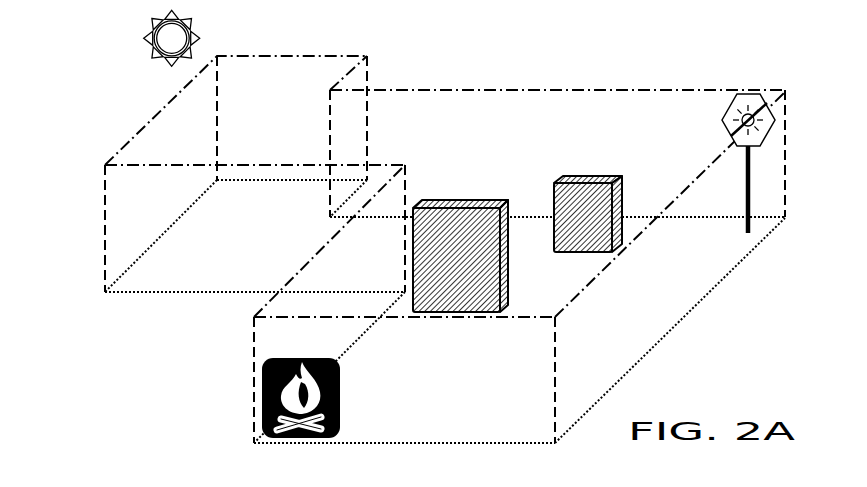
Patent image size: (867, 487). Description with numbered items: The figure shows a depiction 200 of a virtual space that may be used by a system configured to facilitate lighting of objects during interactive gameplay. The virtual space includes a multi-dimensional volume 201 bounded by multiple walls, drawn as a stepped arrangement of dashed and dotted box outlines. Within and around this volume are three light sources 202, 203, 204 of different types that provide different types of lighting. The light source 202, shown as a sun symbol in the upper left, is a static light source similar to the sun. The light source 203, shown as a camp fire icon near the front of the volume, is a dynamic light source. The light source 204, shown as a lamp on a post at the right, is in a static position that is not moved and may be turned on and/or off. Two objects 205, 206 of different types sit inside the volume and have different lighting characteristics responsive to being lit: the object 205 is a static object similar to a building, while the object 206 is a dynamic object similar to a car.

The depiction 200 is at (126, 367).
The multi-dimensional volume 201 is at (90, 228).
The light source 202 is at (128, 51).
The light source 203 is at (352, 405).
The light source 204 is at (714, 132).
The object 205 is at (470, 190).
The object 206 is at (588, 160).